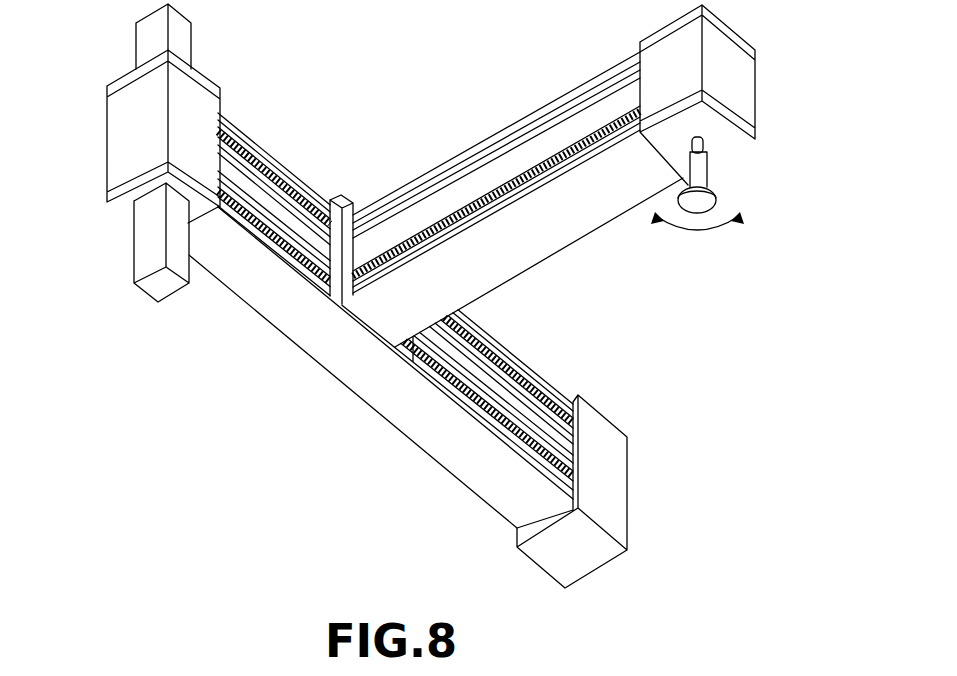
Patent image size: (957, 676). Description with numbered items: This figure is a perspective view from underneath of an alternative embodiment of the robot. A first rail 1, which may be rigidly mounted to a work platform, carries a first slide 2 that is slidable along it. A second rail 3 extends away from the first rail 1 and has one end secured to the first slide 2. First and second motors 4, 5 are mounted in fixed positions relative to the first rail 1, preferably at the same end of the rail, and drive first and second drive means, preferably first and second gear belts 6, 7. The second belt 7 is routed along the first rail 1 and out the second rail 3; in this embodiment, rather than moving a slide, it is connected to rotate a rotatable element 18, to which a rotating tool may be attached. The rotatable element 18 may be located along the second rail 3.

The first rail 1 is at (392, 402).
The first slide 2 is at (343, 215).
The second rail 3 is at (528, 115).
The first motor 4 is at (181, 40).
The second motor 5 is at (145, 240).
The first gear belt 6 is at (255, 158).
The second gear belt 7 is at (292, 258).
The rotatable element 18 is at (720, 194).